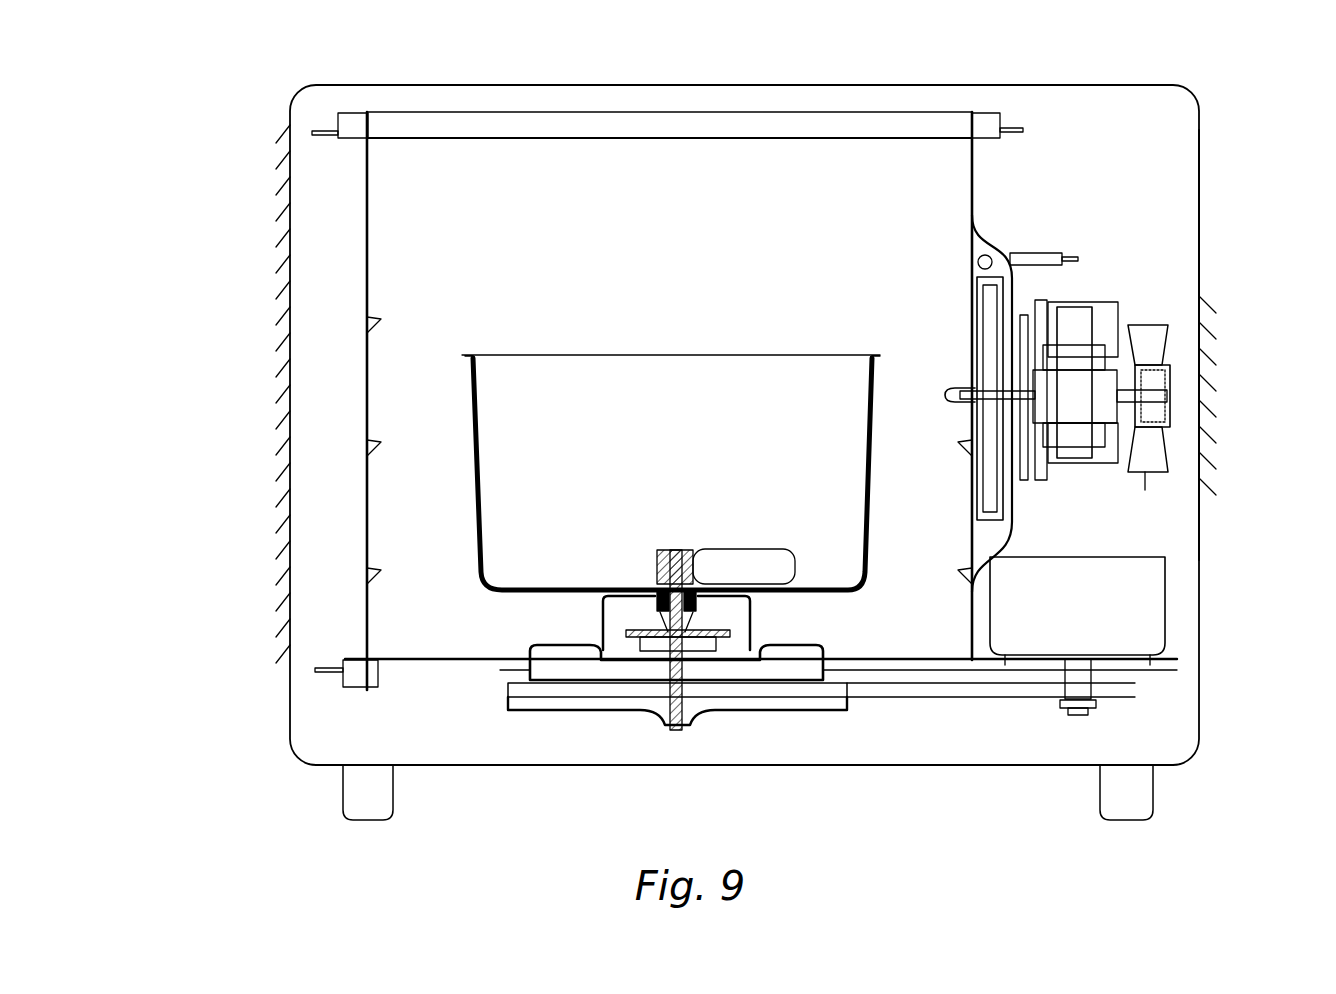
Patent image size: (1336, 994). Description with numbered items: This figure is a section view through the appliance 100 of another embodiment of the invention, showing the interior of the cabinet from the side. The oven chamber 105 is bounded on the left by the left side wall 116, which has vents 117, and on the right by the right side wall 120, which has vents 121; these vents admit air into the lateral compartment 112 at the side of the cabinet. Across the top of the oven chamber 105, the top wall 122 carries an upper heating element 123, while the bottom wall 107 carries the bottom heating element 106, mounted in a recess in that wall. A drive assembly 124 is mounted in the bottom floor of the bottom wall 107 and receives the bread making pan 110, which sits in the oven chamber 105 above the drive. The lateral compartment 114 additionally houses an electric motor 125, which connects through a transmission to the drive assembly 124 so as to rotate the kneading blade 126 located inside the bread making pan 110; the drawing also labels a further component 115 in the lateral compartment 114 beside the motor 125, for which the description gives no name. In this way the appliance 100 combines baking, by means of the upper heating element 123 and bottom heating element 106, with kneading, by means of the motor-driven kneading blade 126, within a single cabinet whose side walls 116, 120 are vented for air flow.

The appliance 100 is at (660, 85).
The oven chamber 105 is at (473, 195).
The bottom heating element 106 is at (442, 662).
The bottom wall 107 is at (410, 663).
The bread making pan 110 is at (462, 357).
The lateral compartment 112 is at (1175, 158).
The lateral compartment 114 is at (975, 178).
The fan motor assembly 115 is at (1177, 448).
The left side wall 116 is at (313, 642).
The vents 117 is at (278, 518).
The right side wall 120 is at (1207, 210).
The vents 121 is at (1207, 401).
The top wall 122 is at (405, 97).
The upper heating element 123 is at (723, 135).
The drive assembly 124 is at (830, 643).
The electric motor 125 is at (1140, 597).
The kneading blade 126 is at (757, 565).